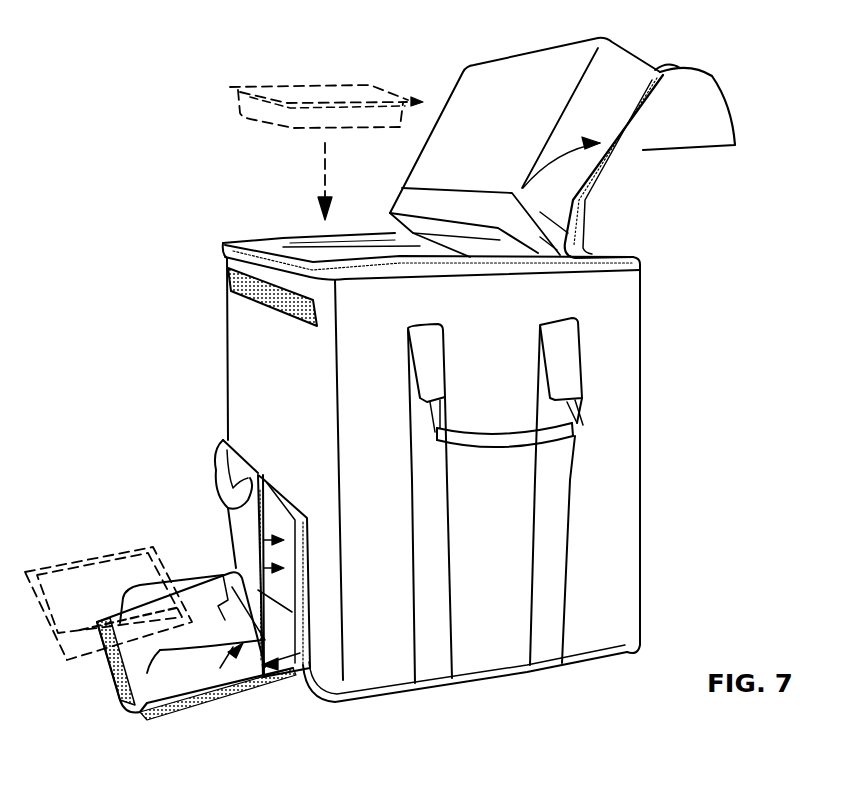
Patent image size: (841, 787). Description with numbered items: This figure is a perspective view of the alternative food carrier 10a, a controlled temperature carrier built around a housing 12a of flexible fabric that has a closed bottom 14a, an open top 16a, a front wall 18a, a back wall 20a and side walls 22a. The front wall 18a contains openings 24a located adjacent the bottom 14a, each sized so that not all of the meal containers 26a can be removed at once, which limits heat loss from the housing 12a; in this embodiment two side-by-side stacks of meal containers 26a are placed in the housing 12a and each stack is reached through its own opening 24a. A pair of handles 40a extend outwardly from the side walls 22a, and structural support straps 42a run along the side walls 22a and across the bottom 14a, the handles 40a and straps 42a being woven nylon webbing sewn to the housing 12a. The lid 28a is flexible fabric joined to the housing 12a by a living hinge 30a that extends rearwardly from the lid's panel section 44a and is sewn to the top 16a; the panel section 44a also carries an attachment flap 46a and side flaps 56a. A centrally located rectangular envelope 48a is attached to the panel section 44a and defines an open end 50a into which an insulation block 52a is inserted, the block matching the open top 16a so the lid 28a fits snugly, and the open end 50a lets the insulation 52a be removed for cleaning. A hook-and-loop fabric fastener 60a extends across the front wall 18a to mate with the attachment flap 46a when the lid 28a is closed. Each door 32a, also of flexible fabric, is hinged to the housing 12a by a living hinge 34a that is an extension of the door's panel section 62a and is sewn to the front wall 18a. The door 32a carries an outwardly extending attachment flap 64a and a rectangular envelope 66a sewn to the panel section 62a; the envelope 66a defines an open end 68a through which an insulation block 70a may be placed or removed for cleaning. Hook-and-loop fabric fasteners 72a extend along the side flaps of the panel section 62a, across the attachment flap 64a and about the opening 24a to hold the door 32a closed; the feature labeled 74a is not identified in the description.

The food carrier 10a is at (152, 158).
The housing 12a is at (641, 300).
The bottom 14a is at (500, 684).
The open top 16a is at (340, 250).
The front wall 18a is at (242, 352).
The back wall 20a is at (680, 378).
The side walls 22a is at (625, 522).
The opening 24a is at (257, 538).
The meal containers 26a is at (312, 82).
The lid 28a is at (645, 53).
The living hinge 30a is at (588, 250).
The door 32a is at (187, 712).
The living hinge 34a is at (290, 680).
The handles 40a is at (590, 432).
The structural support straps 42a is at (555, 605).
The panel section 44a is at (640, 152).
The attachment flap 46a is at (738, 104).
The envelope 48a is at (497, 93).
The open end 50a is at (413, 229).
The insulation block 52a is at (470, 240).
The side flaps 56a is at (672, 74).
The hook-and-loop type fabric fastener 60a is at (228, 283).
The panel section 62a is at (207, 700).
The attachment flap 64a is at (113, 697).
The envelope 66a is at (168, 680).
The open end 68a is at (303, 660).
The insulation block 70a is at (283, 583).
The hook-and-loop type fabric fasteners 72a is at (107, 668).
The door bottom binding 74a is at (255, 702).